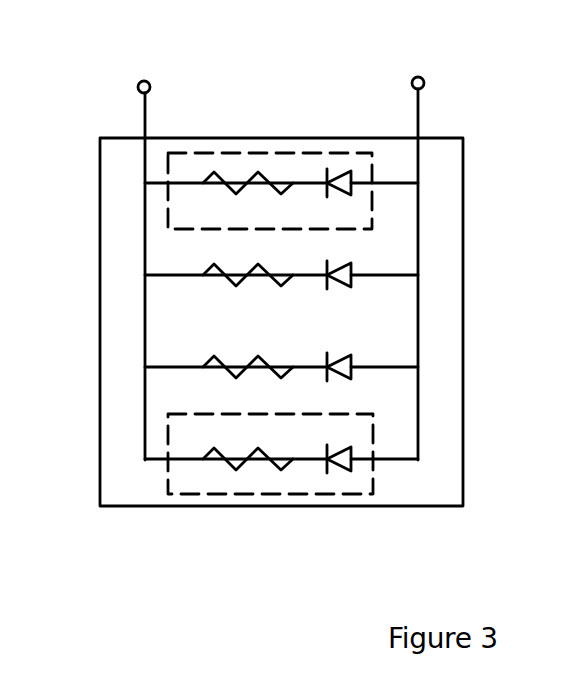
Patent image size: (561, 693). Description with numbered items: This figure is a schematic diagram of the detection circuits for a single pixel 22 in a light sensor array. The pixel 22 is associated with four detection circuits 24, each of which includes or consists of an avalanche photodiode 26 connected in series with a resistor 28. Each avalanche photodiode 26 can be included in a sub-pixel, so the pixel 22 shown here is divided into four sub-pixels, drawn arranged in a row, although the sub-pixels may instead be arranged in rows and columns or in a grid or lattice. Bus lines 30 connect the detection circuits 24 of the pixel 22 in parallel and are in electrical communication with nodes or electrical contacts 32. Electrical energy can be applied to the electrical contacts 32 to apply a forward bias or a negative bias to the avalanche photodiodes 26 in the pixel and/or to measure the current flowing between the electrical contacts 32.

The pixel 22 is at (99, 140).
The detection circuit 24 is at (280, 150).
The avalanche photodiode 26 is at (350, 174).
The resistor 28 is at (236, 194).
The bus line 30 is at (145, 305).
The electrical contact 32 is at (144, 80).